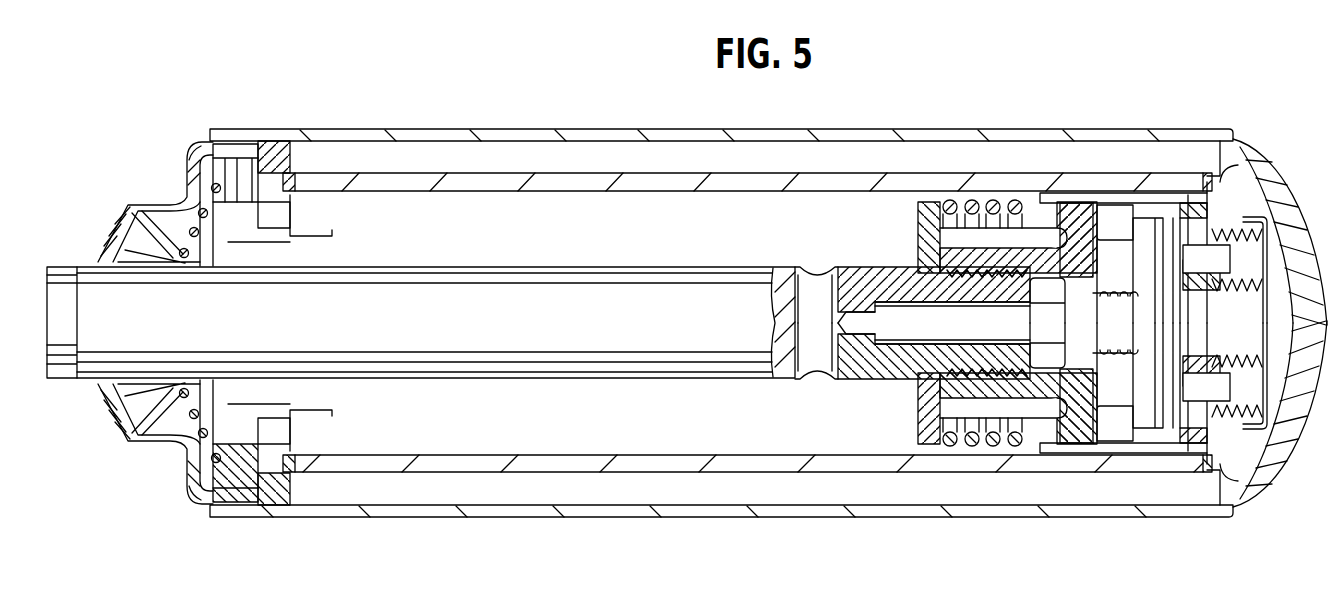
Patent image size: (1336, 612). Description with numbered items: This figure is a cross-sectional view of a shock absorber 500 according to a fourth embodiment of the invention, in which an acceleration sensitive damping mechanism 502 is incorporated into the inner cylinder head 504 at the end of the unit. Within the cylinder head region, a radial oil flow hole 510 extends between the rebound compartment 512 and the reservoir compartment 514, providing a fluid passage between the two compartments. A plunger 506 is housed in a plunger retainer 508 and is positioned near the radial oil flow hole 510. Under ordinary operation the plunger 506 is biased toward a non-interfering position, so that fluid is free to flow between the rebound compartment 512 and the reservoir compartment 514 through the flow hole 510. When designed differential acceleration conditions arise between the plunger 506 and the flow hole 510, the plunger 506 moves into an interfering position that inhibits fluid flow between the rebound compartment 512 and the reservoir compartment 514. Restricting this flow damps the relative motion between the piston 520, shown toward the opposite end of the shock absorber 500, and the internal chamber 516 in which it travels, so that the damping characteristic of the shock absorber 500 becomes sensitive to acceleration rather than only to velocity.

The shock absorber 500 is at (610, 90).
The acceleration sensitive damping mechanism 502 is at (303, 165).
The inner cylinder head 504 is at (233, 467).
The plunger 506 is at (264, 205).
The plunger retainer 508 is at (187, 203).
The radial oil flow hole 510 is at (237, 177).
The rebound compartment 512 is at (657, 210).
The reservoir compartment 514 is at (507, 157).
The internal chamber 516 is at (573, 473).
The piston 520 is at (1082, 427).